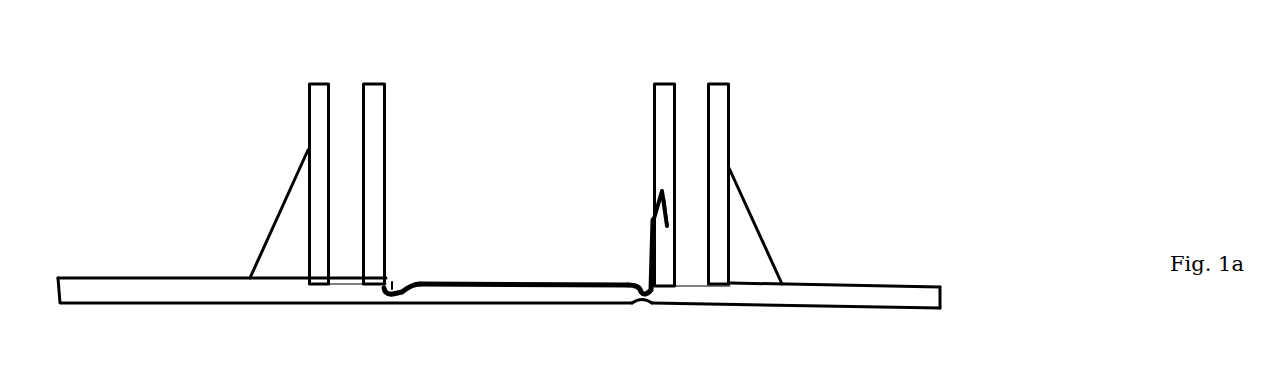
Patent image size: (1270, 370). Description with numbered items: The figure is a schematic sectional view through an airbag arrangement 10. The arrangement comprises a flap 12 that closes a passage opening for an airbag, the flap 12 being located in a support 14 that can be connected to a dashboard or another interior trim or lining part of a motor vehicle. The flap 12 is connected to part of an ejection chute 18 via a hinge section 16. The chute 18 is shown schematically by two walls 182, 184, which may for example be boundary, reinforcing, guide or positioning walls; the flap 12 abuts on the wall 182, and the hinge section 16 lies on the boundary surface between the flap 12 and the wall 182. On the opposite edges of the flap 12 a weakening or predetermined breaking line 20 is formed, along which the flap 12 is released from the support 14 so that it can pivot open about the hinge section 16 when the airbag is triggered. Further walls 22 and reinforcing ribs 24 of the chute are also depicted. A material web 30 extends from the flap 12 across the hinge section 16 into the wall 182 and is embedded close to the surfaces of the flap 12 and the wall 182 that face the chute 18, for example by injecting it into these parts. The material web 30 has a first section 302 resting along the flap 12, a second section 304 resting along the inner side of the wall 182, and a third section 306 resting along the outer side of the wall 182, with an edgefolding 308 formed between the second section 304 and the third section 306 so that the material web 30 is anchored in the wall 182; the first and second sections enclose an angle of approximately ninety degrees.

The airbag arrangement 10 is at (952, 123).
The flap 12 is at (440, 298).
The support 14 is at (927, 298).
The hinge section 16 is at (643, 308).
The ejection chute 18 is at (503, 109).
The wall 182 is at (665, 95).
The wall 184 is at (373, 92).
The predetermined breaking line 20 is at (392, 293).
The further walls 22 is at (318, 118).
The reinforcing ribs 24 is at (287, 233).
The material web 30 is at (557, 282).
The first section 302 is at (484, 283).
The second section 304 is at (649, 237).
The third section 306 is at (672, 217).
The edgefolding 308 is at (659, 191).